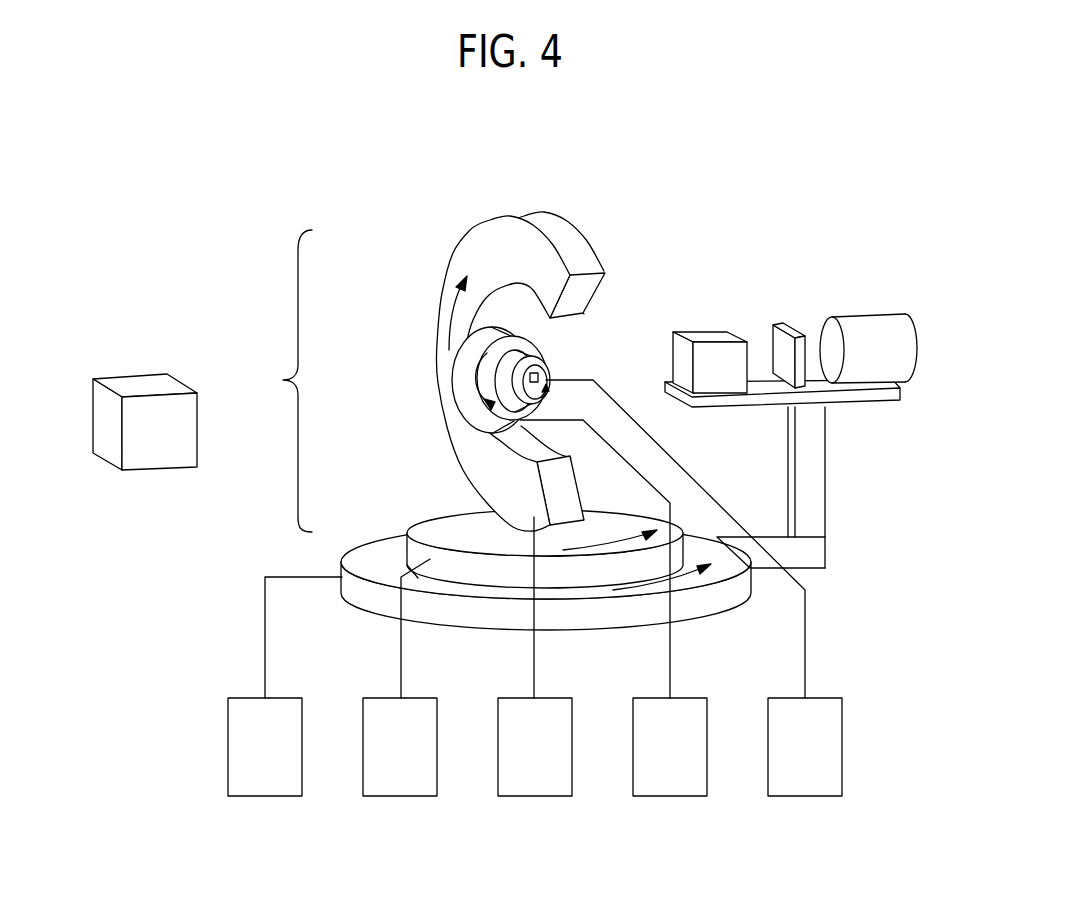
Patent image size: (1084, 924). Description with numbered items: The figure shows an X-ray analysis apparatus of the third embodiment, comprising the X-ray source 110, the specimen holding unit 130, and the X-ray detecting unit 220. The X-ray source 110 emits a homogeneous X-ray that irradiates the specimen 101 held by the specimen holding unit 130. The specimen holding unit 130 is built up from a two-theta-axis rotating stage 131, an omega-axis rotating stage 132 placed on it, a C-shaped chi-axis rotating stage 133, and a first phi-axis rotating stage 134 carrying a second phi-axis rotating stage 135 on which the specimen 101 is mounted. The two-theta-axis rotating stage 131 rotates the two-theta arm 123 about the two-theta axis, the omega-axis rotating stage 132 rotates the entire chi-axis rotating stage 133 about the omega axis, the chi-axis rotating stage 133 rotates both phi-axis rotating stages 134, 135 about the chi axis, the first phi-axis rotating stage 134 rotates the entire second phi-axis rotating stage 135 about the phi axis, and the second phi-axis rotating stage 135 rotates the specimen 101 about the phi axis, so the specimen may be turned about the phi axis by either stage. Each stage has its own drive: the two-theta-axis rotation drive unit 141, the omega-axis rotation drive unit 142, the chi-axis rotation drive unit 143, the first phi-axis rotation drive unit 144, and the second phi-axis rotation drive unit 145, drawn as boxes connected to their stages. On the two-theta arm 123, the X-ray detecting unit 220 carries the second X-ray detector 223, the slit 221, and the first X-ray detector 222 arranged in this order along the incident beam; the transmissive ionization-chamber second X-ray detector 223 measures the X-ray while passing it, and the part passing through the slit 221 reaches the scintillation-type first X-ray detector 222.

The specimen 101 is at (540, 378).
The X-ray source 110 is at (143, 383).
The 2θ arm 123 is at (825, 451).
The specimen holding unit 130 is at (276, 381).
The 2θ-axis rotating stage 131 is at (392, 550).
The ω-axis rotating stage 132 is at (440, 520).
The χ-axis rotating stage 133 is at (463, 250).
The first φ-axis rotating stage 134 is at (463, 380).
The second φ-axis rotating stage 135 is at (473, 428).
The 2θ-axis rotation drive unit 141 is at (265, 797).
The ω-axis rotation drive unit 142 is at (400, 797).
The χ-axis rotation drive unit 143 is at (535, 797).
The first φ-axis rotation drive unit 144 is at (670, 797).
The second φ-axis rotation drive unit 145 is at (805, 797).
The X-ray detecting unit 220 is at (895, 275).
The slit 221 is at (787, 328).
The first X-ray detector 222 is at (866, 328).
The second X-ray detector 223 is at (706, 333).